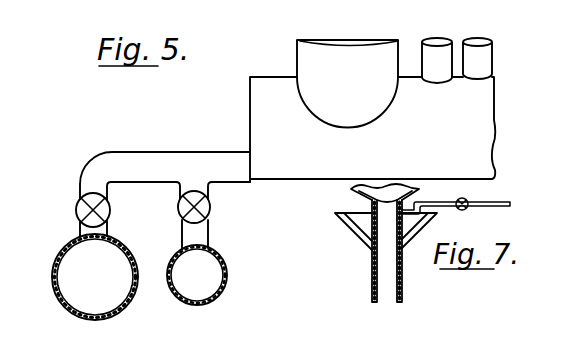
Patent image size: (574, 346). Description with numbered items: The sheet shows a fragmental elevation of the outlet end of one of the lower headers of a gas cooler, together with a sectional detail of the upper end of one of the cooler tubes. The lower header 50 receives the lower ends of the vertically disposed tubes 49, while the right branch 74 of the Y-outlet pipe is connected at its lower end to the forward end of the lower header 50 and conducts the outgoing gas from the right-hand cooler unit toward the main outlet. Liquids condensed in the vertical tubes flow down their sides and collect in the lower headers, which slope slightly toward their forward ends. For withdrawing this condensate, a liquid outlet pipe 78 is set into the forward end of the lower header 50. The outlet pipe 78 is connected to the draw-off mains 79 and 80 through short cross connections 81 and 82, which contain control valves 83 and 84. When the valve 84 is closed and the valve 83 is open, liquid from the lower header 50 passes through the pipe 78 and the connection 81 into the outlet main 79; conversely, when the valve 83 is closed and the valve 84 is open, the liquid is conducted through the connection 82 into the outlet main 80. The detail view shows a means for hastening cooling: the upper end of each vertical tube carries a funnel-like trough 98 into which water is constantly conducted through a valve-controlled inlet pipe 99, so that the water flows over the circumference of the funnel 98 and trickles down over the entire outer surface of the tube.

In FIG. 5, the lower header 50 is at (256, 107).
In FIG. 5, the right branch of the Y-outlet pipe 74 is at (298, 52).
In FIG. 5, the vertically disposed tubes 49 is at (477, 47).
In FIG. 5, the liquid outlet pipe 78 is at (137, 158).
In FIG. 5, the control valve 83 is at (108, 209).
In FIG. 5, the control valve 84 is at (212, 204).
In FIG. 5, the cross connection 81 is at (105, 231).
In FIG. 5, the cross connection 82 is at (205, 232).
In FIG. 5, the draw-off main 79 is at (69, 296).
In FIG. 5, the draw-off main 80 is at (201, 293).
In FIG. 7, the funnel-like trough 98 is at (349, 230).
In FIG. 7, the valve-controlled inlet pipe 99 is at (480, 206).